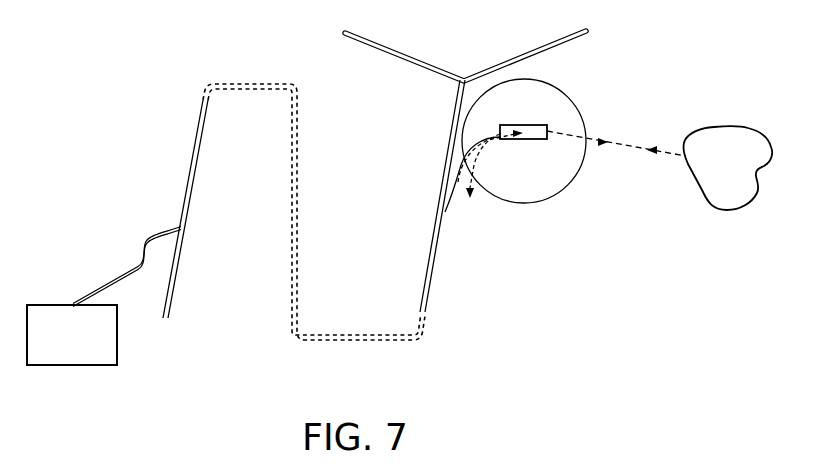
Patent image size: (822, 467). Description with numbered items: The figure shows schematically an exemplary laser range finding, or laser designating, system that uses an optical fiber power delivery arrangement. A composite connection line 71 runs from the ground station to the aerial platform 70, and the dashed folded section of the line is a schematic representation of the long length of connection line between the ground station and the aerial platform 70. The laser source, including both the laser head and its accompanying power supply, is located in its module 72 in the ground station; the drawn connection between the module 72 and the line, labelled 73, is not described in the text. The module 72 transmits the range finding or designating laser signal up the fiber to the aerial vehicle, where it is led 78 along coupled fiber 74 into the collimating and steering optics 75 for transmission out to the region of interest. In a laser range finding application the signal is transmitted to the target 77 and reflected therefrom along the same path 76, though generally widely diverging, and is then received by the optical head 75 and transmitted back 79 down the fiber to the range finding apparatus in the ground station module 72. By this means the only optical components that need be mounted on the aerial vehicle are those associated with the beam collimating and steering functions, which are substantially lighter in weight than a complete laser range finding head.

The aerial platform 70 is at (388, 53).
The composite connection line 71 is at (194, 162).
The module 72 is at (118, 345).
The cable 73 is at (107, 284).
The coupled fiber 74 is at (462, 126).
The collimating and steering optics 75 is at (547, 140).
The path 76 is at (670, 151).
The target 77 is at (735, 127).
The laser signal led along the fiber 78 is at (463, 152).
The return transmission 79 is at (478, 170).